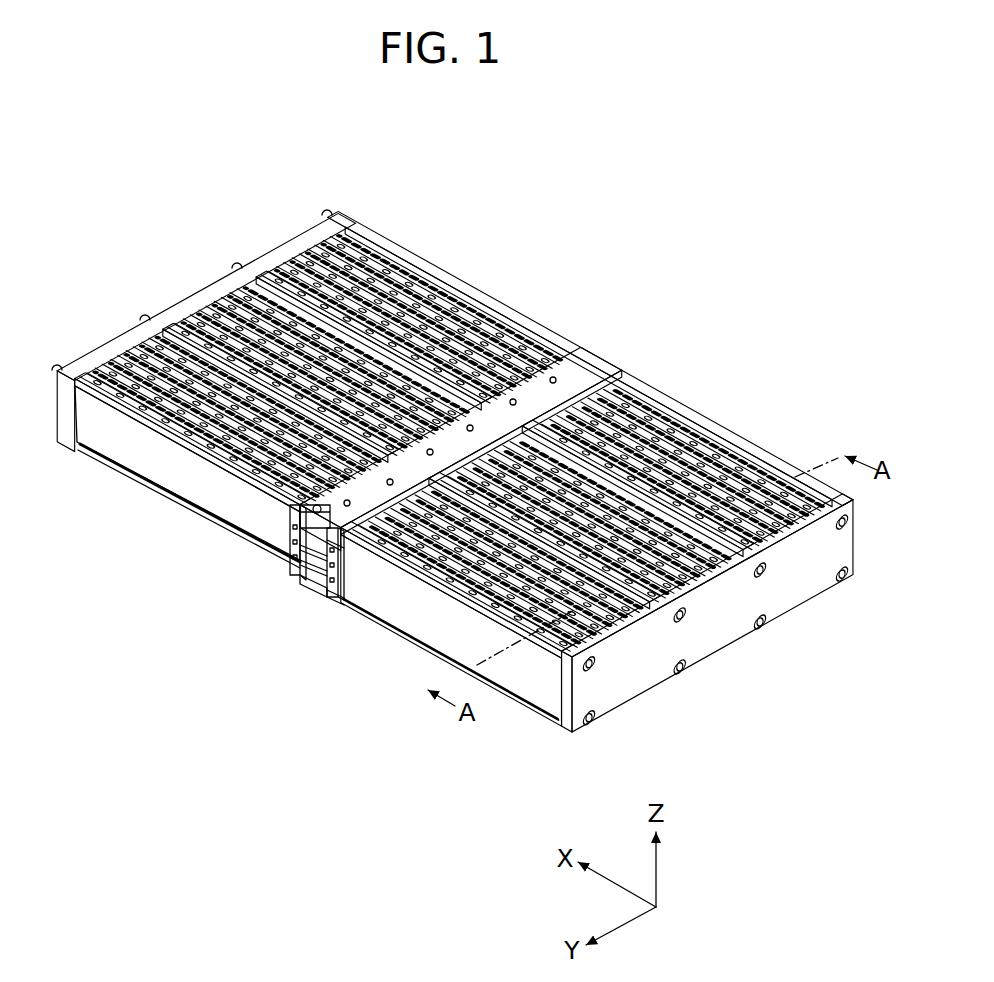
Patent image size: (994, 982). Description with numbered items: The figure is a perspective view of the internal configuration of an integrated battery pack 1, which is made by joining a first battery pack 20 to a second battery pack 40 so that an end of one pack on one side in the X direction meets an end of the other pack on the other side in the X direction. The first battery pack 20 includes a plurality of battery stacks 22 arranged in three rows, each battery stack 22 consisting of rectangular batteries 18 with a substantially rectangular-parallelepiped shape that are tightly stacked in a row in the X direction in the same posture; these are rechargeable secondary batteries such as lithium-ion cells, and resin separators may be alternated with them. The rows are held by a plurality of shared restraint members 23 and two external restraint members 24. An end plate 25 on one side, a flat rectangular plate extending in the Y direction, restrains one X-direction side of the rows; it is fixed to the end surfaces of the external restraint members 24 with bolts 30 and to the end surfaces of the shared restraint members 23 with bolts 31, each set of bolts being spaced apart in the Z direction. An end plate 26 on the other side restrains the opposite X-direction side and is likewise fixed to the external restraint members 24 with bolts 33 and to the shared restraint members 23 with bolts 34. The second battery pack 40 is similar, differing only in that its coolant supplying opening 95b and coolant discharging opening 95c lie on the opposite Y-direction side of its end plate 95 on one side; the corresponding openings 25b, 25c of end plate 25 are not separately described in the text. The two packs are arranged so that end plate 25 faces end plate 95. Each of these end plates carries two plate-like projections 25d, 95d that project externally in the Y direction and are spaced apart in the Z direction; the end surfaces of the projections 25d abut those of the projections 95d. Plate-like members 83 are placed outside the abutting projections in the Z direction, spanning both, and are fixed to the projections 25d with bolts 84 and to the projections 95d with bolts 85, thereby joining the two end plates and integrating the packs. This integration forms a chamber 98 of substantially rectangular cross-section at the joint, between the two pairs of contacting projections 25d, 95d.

The integrated battery pack 1 is at (555, 232).
The rectangular battery 18 is at (707, 477).
The first battery pack 20 is at (708, 415).
The battery stack 22 is at (437, 562).
The shared restraint member 23 is at (618, 428).
The external restraint member 24 is at (537, 648).
The end plate on one side 25 is at (578, 385).
The bracket portion 25b is at (336, 580).
The bracket post 25c is at (348, 572).
The projection 25d is at (330, 582).
The end plate on the other side 26 is at (787, 537).
The bolt 30 is at (290, 500).
The bolt 31 is at (296, 500).
The bolt 33 is at (590, 727).
The bolt 34 is at (680, 680).
The second battery pack 40 is at (405, 250).
The plate-like member 83 is at (471, 425).
The bolt 84 is at (515, 399).
The bolt 85 is at (430, 449).
The end plate on one side 95 is at (300, 452).
The coolant supplying opening 95b is at (302, 547).
The coolant discharging opening 95c is at (292, 527).
The projection 95d is at (306, 580).
The chamber 98 is at (302, 567).